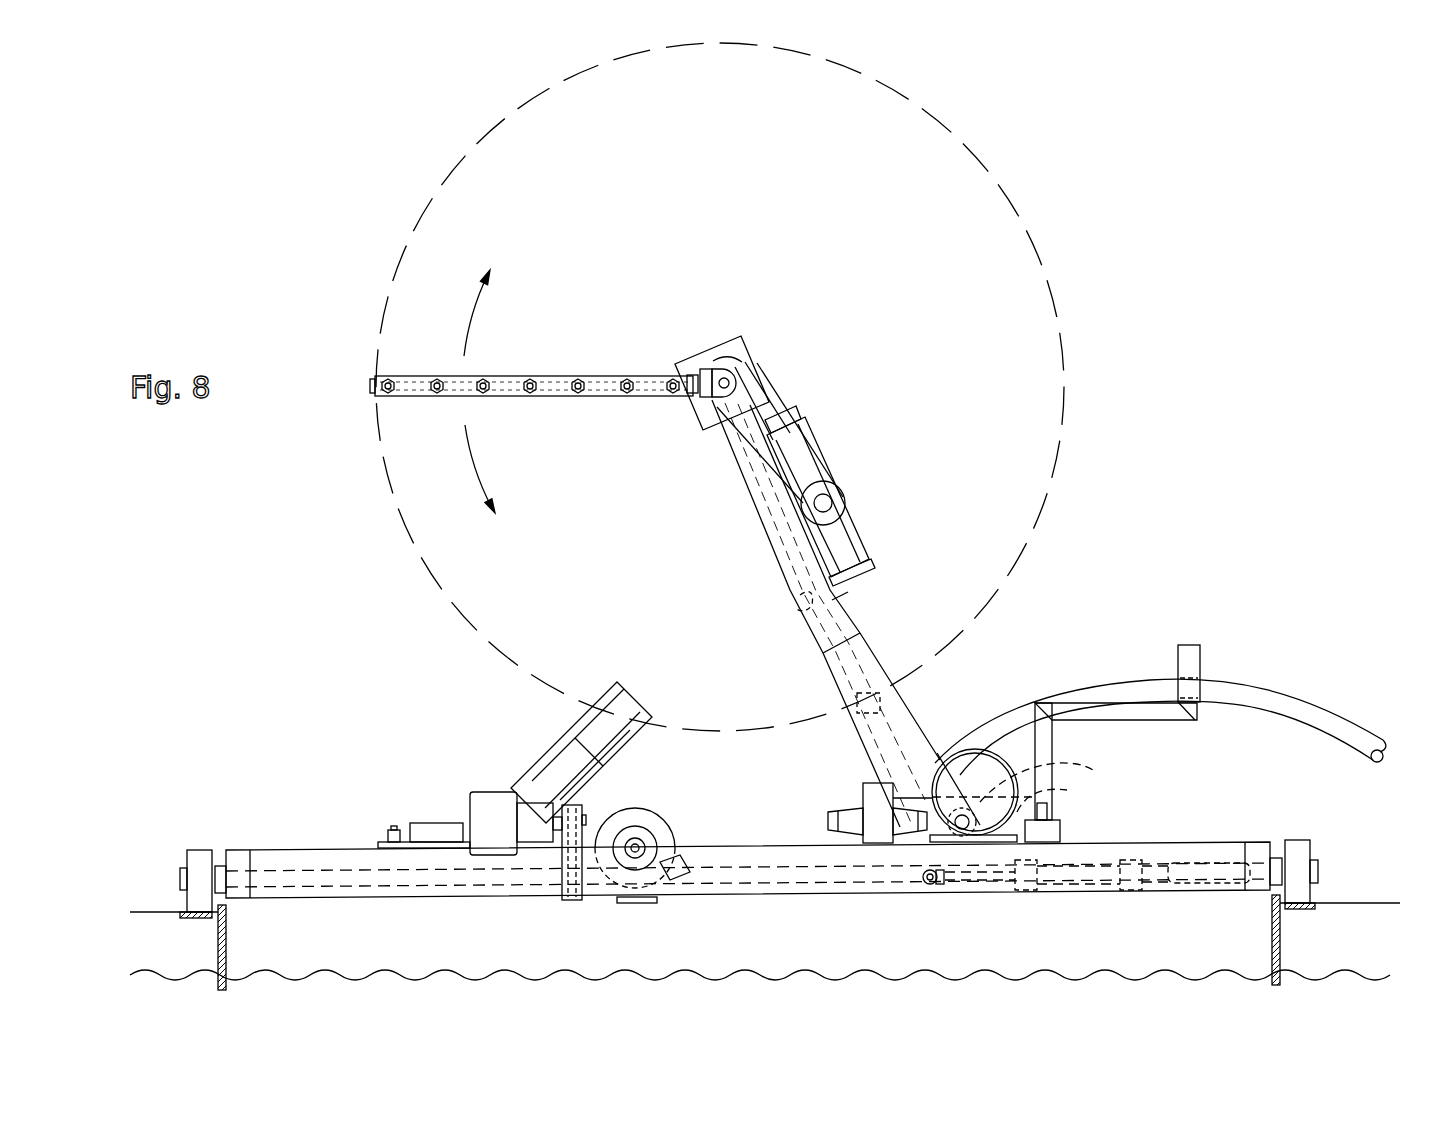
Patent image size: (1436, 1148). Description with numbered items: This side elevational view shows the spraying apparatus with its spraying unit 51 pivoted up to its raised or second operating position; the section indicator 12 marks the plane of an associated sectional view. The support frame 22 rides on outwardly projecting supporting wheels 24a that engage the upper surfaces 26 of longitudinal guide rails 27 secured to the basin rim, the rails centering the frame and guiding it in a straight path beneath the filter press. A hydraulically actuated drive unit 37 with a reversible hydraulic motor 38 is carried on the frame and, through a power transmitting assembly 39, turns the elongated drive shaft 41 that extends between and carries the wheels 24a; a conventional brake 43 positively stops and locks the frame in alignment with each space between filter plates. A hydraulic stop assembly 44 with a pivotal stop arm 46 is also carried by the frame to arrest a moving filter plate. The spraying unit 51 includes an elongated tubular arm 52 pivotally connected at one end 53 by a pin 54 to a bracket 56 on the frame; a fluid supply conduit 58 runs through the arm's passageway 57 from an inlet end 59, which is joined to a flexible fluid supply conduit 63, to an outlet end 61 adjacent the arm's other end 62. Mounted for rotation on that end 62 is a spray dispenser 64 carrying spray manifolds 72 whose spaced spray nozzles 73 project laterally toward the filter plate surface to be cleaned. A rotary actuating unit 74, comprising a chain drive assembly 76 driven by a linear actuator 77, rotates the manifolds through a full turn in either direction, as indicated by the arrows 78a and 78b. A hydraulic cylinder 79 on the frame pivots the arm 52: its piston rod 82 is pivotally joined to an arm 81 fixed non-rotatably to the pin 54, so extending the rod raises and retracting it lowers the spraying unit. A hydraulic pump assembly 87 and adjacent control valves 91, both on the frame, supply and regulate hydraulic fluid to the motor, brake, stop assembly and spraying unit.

The section line 12 is at (77, 93).
The support frame 22 is at (1162, 843).
The supporting wheels 24a is at (200, 848).
The upper surfaces 26 is at (200, 909).
The guide rails 27 is at (224, 936).
The drive unit 37 is at (469, 823).
The hydraulic motor 38 is at (494, 800).
The power transmitting assembly 39 is at (585, 806).
The drive shaft 41 is at (1198, 860).
The brake 43 is at (665, 838).
The stop assembly 44 is at (603, 695).
The stop arm 46 is at (636, 737).
The spraying unit 51 is at (753, 520).
The elongated arm 52 is at (835, 632).
The end 53 is at (1002, 768).
The pin 54 is at (1063, 766).
The bracket 56 is at (1036, 795).
The passageway 57 is at (805, 596).
The fluid supply conduit 58 is at (835, 598).
The inlet end 59 is at (880, 700).
The outlet end 61 is at (767, 407).
The other end 62 is at (716, 430).
The flexible fluid supply conduit 63 is at (1337, 722).
The spray dispenser 64 is at (718, 352).
The spray manifold 72 is at (556, 383).
The spray nozzles 73 is at (437, 396).
The rotary actuating unit 74 is at (845, 507).
The chain drive assembly 76 is at (778, 418).
The linear actuator 77 is at (815, 447).
The arrow 78a is at (470, 447).
The arrow 78b is at (466, 322).
The hydraulic cylinder 79 is at (1090, 867).
The arm 81 is at (957, 850).
The piston rod 82 is at (945, 878).
The hydraulic pump assembly 87 is at (1001, 763).
The control valves 91 is at (838, 812).